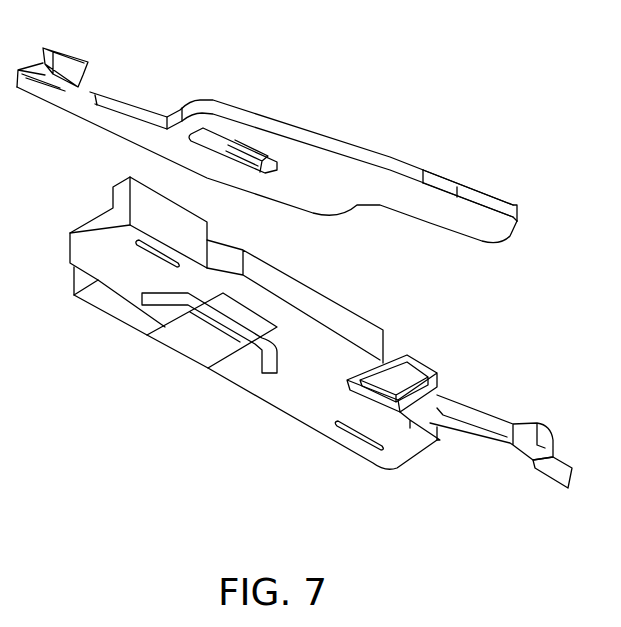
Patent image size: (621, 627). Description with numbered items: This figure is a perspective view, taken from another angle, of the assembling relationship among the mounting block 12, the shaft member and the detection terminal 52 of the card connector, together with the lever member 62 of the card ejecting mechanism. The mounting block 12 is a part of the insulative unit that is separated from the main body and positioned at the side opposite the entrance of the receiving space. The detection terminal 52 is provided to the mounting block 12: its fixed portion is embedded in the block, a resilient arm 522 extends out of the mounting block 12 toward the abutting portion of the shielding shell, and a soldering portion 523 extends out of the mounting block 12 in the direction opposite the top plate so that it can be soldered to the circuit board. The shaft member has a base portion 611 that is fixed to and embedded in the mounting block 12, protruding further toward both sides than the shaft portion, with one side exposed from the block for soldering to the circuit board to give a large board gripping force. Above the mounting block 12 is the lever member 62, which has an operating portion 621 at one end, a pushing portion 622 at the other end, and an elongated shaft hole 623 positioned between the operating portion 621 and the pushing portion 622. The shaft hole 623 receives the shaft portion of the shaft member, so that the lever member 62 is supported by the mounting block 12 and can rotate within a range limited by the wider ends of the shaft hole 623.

The mounting block 12 is at (97, 298).
The detection terminal 52 is at (487, 413).
The lever member 62 is at (337, 147).
The resilient arm 522 is at (508, 443).
The soldering portion 523 is at (408, 378).
The base portion 611 is at (207, 327).
The operating portion 621 is at (72, 57).
The pushing portion 622 is at (483, 228).
The shaft hole 623 is at (262, 173).